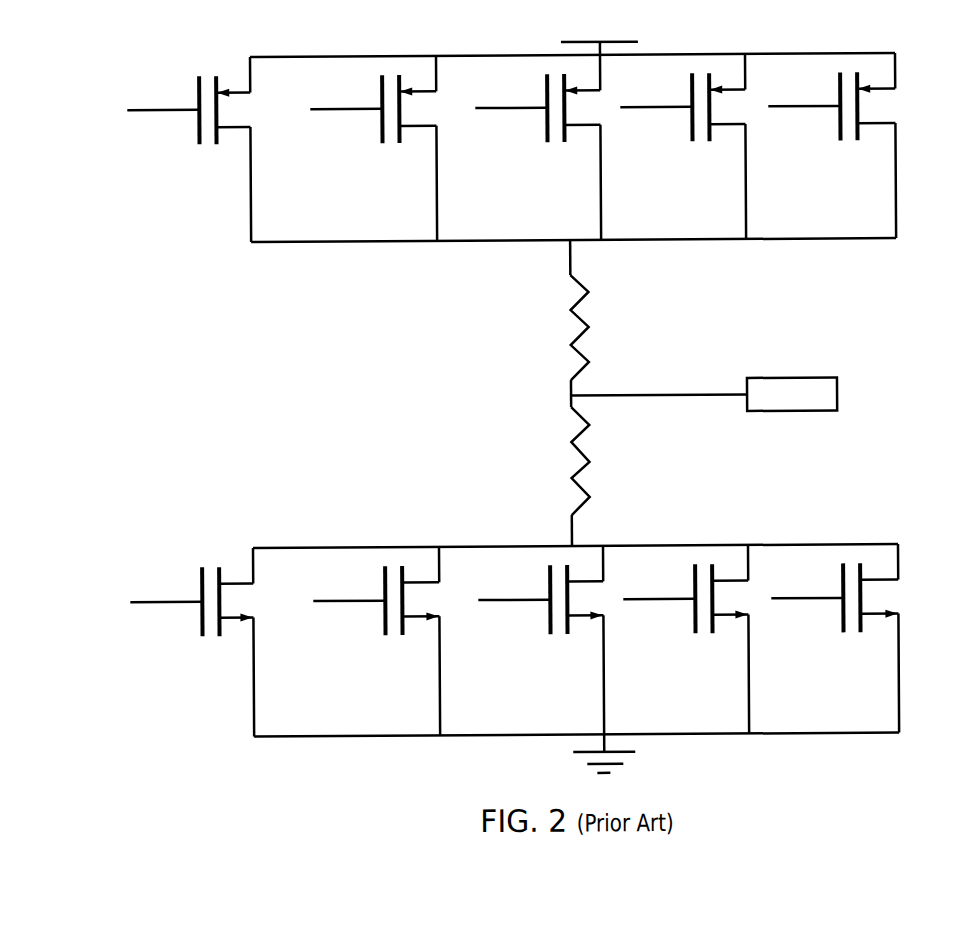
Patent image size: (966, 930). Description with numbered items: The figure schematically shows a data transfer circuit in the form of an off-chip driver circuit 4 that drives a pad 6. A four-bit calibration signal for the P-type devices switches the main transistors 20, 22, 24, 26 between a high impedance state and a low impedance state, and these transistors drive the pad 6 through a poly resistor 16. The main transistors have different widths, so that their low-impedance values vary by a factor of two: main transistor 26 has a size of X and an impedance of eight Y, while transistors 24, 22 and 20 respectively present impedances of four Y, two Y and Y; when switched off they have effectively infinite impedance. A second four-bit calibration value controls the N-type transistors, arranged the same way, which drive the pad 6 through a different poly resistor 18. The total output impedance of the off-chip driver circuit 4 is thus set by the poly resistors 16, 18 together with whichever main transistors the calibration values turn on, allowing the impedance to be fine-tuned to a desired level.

The off-chip driver circuit 4 is at (196, 767).
The pad 6 is at (795, 416).
The poly resistor 16 is at (569, 348).
The poly resistor 18 is at (569, 482).
The main transistor 20 is at (383, 131).
The main transistor 22 is at (548, 135).
The main transistor 24 is at (693, 136).
The main transistor 26 is at (838, 137).